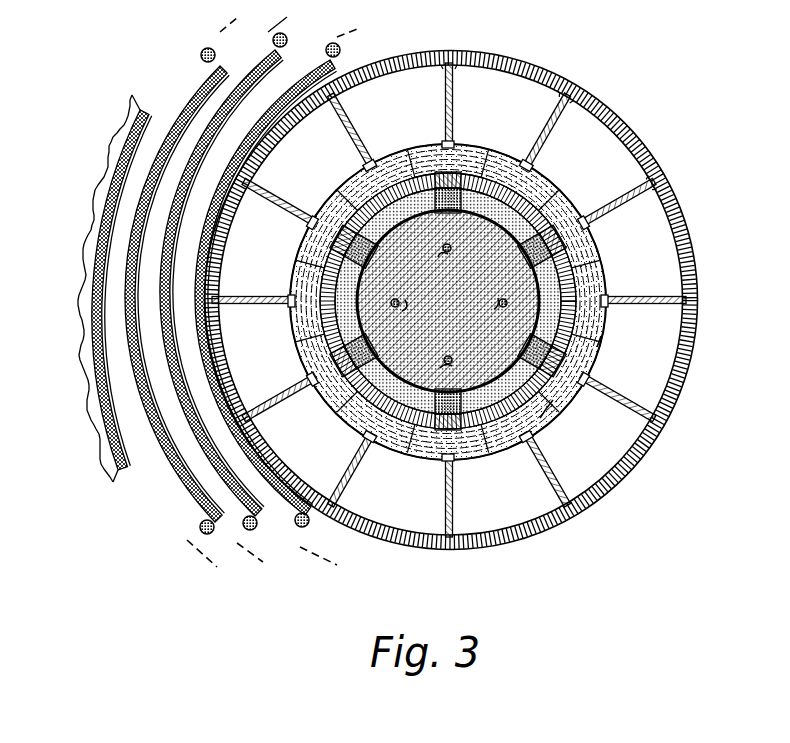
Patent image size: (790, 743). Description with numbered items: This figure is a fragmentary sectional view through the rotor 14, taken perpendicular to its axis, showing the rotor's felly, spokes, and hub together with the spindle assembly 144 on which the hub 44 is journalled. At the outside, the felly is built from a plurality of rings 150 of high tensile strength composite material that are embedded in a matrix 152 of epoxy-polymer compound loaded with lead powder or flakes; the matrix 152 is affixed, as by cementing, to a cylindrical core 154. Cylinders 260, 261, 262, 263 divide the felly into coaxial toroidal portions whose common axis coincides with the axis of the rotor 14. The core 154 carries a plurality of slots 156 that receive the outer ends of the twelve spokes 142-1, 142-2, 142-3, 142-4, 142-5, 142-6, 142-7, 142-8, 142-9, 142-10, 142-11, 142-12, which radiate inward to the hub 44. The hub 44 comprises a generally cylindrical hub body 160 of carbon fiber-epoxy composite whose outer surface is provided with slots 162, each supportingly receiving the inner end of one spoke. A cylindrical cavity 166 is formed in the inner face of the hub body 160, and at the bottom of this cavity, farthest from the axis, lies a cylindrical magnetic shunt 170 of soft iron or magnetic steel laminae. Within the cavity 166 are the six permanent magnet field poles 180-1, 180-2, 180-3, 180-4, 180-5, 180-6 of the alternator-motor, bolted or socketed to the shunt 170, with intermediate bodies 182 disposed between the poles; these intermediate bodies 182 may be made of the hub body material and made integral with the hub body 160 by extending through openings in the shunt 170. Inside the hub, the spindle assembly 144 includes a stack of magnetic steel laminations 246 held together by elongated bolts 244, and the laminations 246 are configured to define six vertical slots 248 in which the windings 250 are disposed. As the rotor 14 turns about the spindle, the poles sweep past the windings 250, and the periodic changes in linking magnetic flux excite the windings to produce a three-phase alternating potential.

The rotor 14 is at (185, 65).
The rings 150 is at (290, 60).
The matrix 152 is at (112, 160).
The cylindrical core 154 is at (430, 50).
The slots 156 is at (455, 62).
The spoke 142-1 is at (258, 299).
The spoke 142-2 is at (293, 180).
The spoke 142-3 is at (341, 112).
The spoke 142-4 is at (453, 104).
The spoke 142-5 is at (551, 128).
The spoke 142-6 is at (597, 216).
The spoke 142-7 is at (665, 305).
The spoke 142-8 is at (608, 396).
The spoke 142-9 is at (540, 462).
The spoke 142-10 is at (445, 480).
The spoke 142-11 is at (360, 452).
The spoke 142-12 is at (296, 388).
The slots 162 is at (446, 141).
The hub 44 is at (488, 142).
The spindle assembly 144 is at (553, 422).
The intermediate bodies 182 is at (448, 302).
The windings 250 is at (347, 179).
The cylindrical cavity 166 is at (588, 292).
The magnetic shunt 170 is at (600, 284).
The hub body 160 is at (297, 322).
The magnetic steel laminations 246 is at (599, 338).
The permanent magnet field pole 180-1 is at (372, 262).
The permanent magnet field pole 180-2 is at (436, 192).
The permanent magnet field pole 180-3 is at (530, 225).
The permanent magnet field pole 180-4 is at (535, 340).
The permanent magnet field pole 180-5 is at (463, 415).
The permanent magnet field pole 180-6 is at (375, 385).
The vertical slots 248 is at (443, 247).
The elongated bolts 244 is at (462, 360).
The cylinder 260 is at (340, 522).
The cylinder 261 is at (302, 550).
The cylinder 262 is at (222, 552).
The cylinder 263 is at (195, 548).